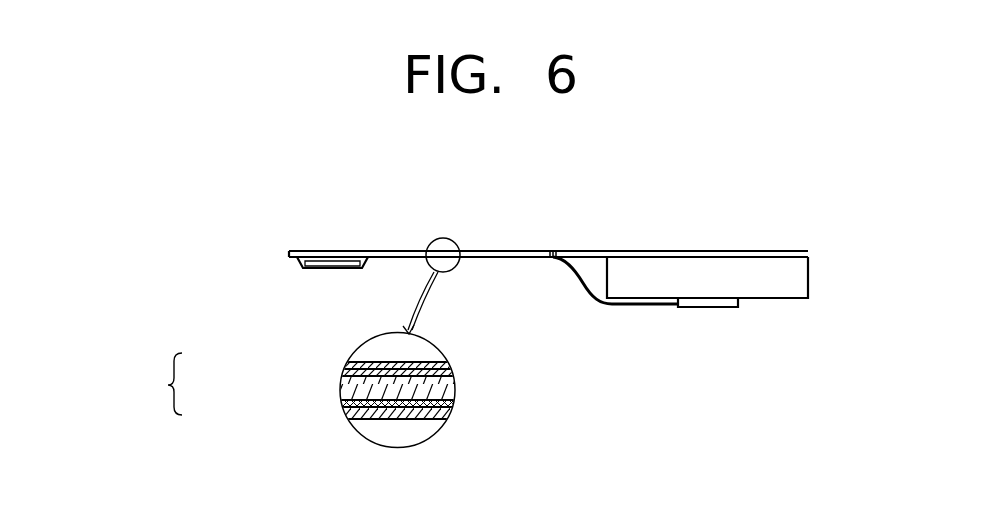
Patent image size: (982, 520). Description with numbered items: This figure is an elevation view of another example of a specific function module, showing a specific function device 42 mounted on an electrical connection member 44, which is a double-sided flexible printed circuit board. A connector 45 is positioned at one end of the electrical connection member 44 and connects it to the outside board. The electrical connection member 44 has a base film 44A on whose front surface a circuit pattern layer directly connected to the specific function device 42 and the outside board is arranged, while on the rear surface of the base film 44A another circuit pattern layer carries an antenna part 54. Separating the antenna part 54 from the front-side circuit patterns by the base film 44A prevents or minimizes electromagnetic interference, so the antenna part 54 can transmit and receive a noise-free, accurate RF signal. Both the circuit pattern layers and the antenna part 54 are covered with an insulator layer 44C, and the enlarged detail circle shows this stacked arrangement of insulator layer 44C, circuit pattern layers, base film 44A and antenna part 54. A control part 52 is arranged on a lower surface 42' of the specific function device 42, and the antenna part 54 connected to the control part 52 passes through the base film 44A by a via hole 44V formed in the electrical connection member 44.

The electrical connection member 44 is at (650, 250).
The via hole 44V is at (552, 250).
The connector 45 is at (330, 269).
The specific function device 42 is at (738, 277).
The display panel bottom surface 42' is at (774, 330).
The antenna part 54 is at (620, 306).
The control part 52 is at (709, 307).
The base film 44A is at (448, 393).
The insulator layer 44C is at (450, 366).